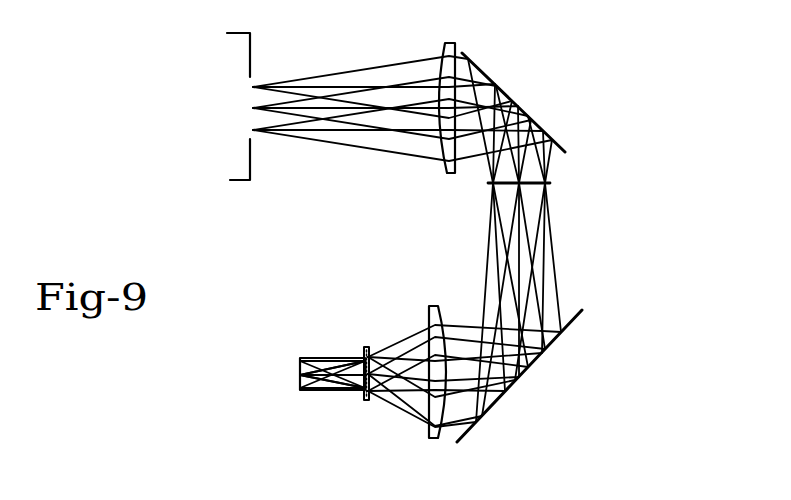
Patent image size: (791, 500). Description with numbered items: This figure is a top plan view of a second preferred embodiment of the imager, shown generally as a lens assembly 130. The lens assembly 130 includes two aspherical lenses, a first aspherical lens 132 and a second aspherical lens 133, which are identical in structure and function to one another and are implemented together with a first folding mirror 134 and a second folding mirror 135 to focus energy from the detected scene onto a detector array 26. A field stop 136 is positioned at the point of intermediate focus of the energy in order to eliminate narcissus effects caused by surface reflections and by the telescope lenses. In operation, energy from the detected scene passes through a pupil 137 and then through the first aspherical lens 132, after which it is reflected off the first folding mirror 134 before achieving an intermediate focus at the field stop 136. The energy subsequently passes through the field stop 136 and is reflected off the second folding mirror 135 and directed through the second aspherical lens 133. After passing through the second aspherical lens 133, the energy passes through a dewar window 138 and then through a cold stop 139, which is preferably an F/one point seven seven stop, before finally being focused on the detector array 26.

The lens assembly 130 is at (654, 70).
The first aspherical lens 132 is at (450, 38).
The second aspherical lens 133 is at (433, 438).
The first folding mirror 134 is at (548, 128).
The second folding mirror 135 is at (557, 343).
The field stop 136 is at (555, 183).
The pupil 137 is at (226, 108).
The dewar window 138 is at (368, 401).
The cold stop 139 is at (357, 328).
The detector array 26 is at (298, 377).